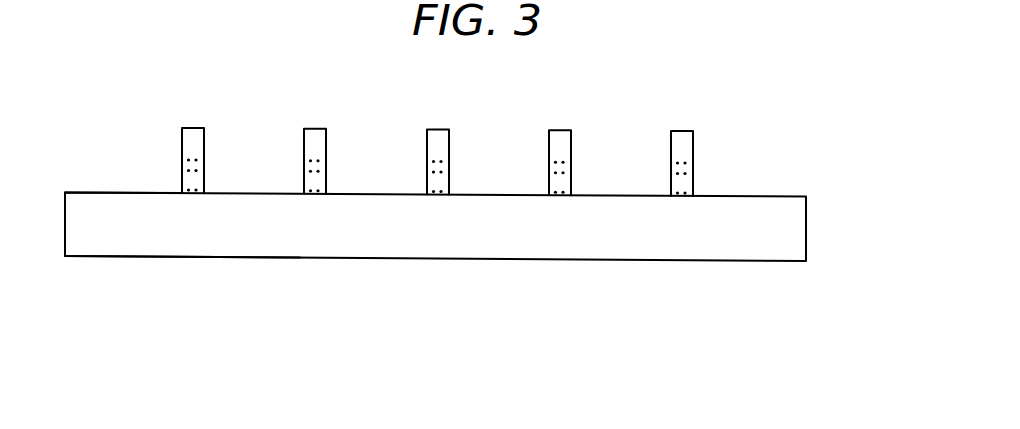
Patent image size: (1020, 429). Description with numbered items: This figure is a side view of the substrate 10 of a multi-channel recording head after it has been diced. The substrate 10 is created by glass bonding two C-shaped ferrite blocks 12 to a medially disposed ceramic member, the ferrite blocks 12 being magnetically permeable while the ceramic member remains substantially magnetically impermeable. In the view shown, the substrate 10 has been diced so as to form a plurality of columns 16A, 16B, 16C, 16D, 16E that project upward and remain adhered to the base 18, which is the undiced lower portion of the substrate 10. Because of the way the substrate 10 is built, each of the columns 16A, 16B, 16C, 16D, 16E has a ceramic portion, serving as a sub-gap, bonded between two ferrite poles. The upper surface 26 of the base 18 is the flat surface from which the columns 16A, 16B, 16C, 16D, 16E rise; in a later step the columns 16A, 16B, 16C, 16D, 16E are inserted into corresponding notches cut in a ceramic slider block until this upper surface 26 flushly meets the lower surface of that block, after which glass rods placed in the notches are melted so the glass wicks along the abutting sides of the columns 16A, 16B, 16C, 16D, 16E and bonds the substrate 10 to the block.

The substrate 10 is at (790, 135).
The C-shaped ferrite block 12 is at (808, 221).
The column 16A is at (187, 128).
The column 16B is at (309, 129).
The column 16C is at (432, 130).
The column 16D is at (554, 130).
The column 16E is at (676, 131).
The base 18 is at (137, 235).
The upper surface 26 is at (130, 190).